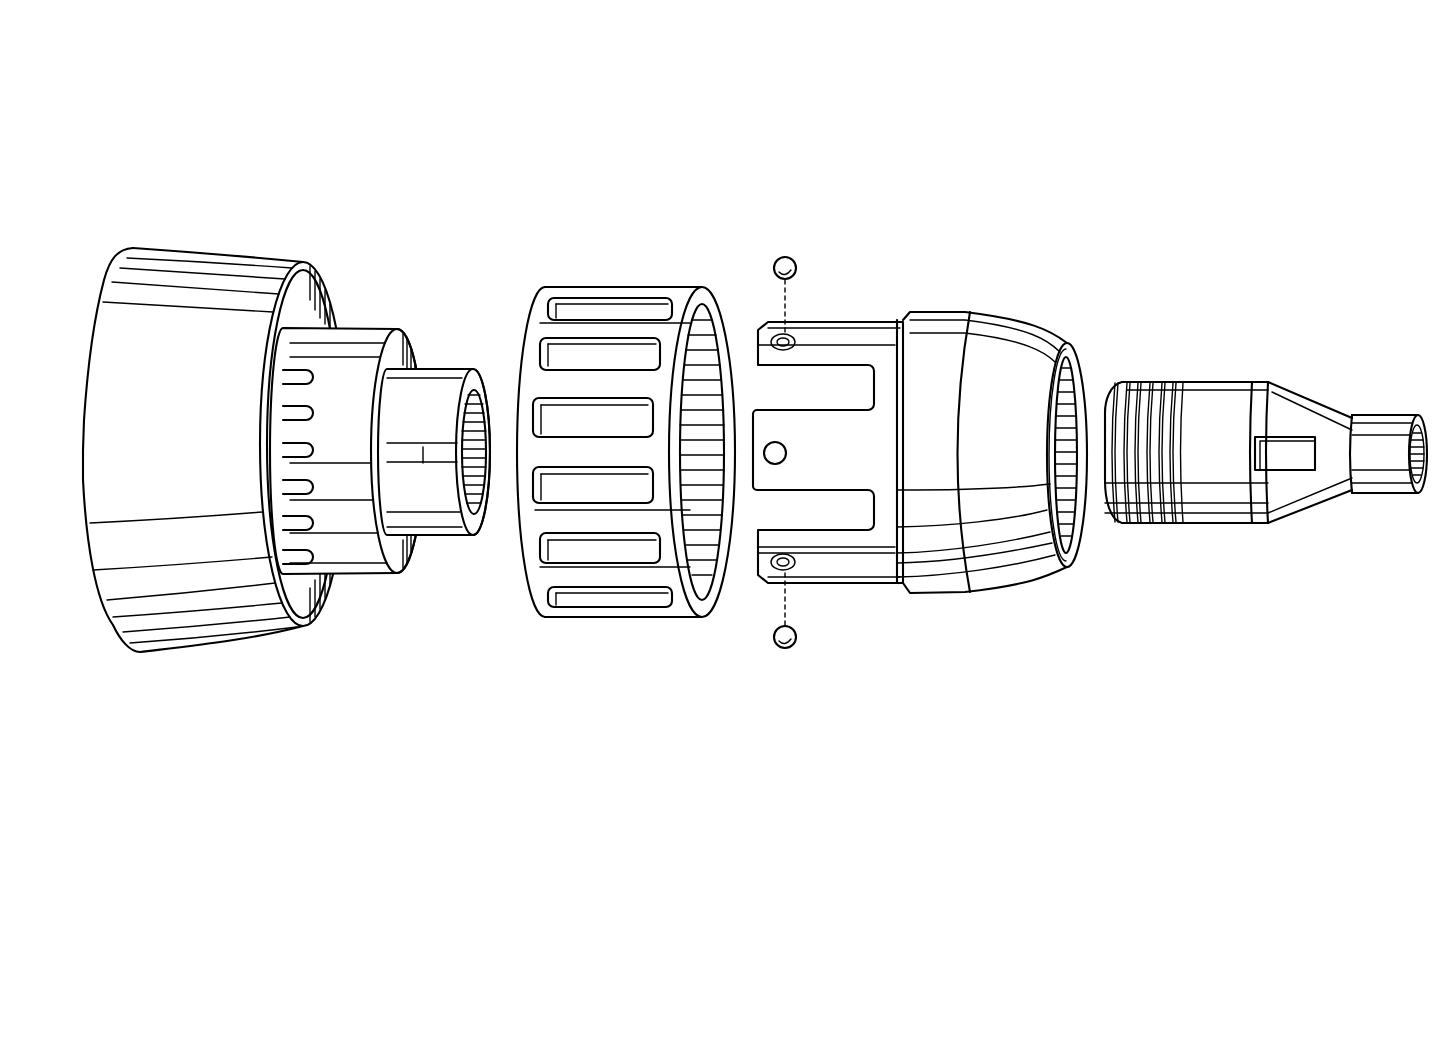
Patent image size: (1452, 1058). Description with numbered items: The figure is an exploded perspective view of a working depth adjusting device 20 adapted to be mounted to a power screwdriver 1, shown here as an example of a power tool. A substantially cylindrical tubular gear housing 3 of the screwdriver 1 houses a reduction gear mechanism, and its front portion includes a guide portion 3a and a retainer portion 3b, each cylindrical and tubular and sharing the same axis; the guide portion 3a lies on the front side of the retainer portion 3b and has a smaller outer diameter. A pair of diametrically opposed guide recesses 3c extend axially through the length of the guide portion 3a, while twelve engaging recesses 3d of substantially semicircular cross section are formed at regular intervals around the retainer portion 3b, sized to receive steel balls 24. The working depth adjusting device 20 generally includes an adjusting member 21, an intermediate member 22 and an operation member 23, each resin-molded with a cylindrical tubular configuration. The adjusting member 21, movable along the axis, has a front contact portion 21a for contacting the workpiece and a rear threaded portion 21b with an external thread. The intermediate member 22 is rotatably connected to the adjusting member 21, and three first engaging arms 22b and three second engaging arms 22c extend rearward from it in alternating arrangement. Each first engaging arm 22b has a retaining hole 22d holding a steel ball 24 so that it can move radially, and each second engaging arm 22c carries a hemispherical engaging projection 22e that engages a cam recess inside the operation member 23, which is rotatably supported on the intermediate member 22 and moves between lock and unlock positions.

The power screwdriver 1 is at (223, 212).
The gear housing 3 is at (181, 256).
The guide portion 3a is at (440, 386).
The retainer portion 3b is at (361, 356).
The guide recesses 3c is at (503, 412).
The engaging recesses 3d is at (281, 362).
The working depth adjusting device 20 is at (949, 275).
The adjusting member 21 is at (1228, 395).
The contact portion 21a is at (1378, 432).
The threaded portion 21b is at (1148, 384).
The intermediate member 22 is at (1000, 352).
The first engaging arms 22b is at (836, 346).
The second engaging arms 22c is at (795, 437).
The retaining hole 22d is at (791, 328).
The engaging projection 22e is at (748, 578).
The operation member 23 is at (605, 287).
The steel balls 24 is at (786, 257).